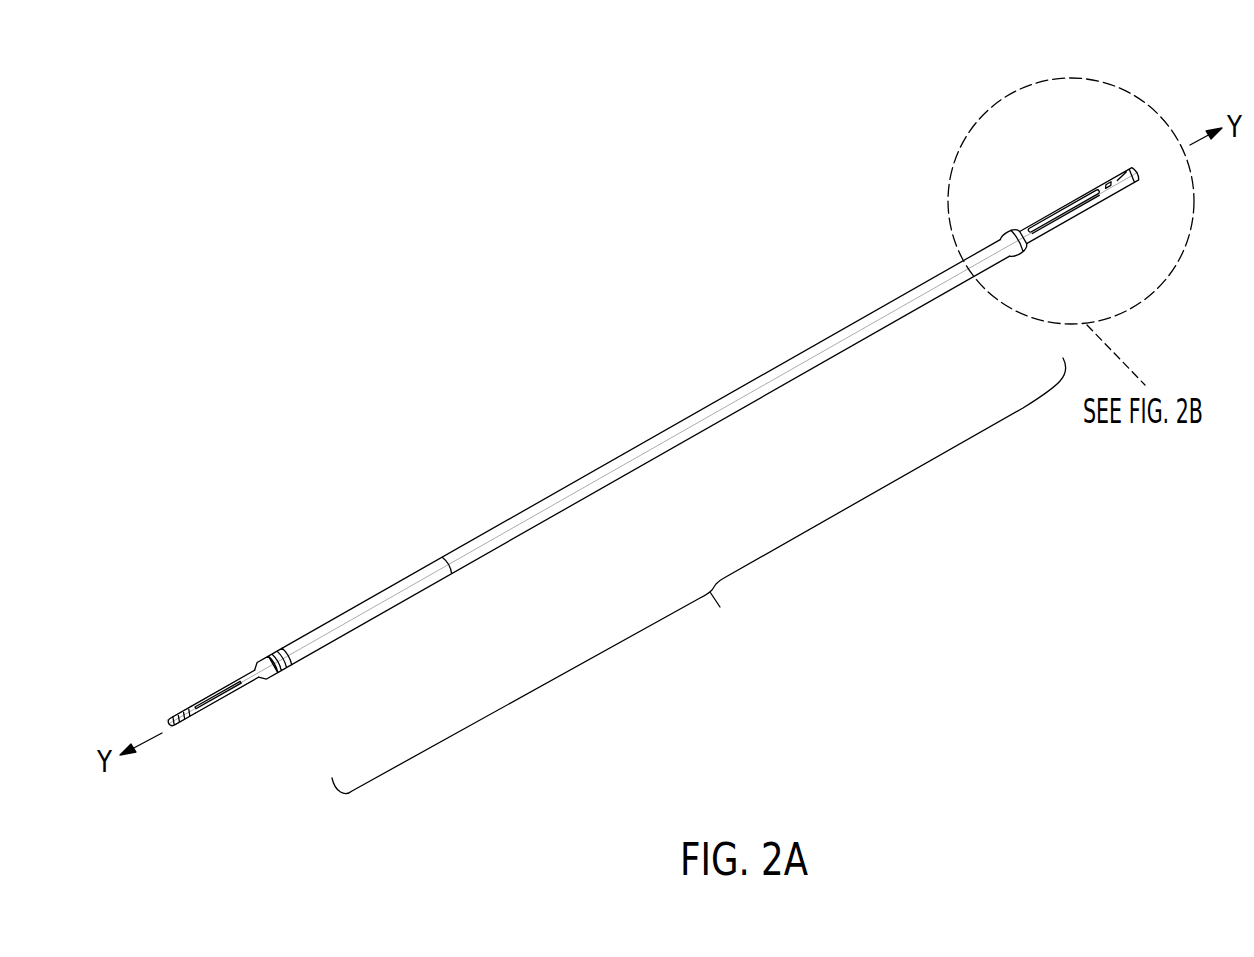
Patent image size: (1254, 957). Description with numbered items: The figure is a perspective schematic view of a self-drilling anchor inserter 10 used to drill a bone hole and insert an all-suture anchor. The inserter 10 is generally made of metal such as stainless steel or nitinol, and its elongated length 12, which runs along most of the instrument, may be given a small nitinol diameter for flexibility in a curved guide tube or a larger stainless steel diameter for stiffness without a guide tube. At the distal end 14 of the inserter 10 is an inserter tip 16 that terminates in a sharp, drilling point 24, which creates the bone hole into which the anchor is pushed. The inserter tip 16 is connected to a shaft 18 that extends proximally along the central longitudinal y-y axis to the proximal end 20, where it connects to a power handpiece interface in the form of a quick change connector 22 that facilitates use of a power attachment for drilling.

The self-drilling anchor inserter 10 is at (573, 312).
The length 12 is at (645, 452).
The distal end 14 is at (262, 710).
The inserter tip 16 is at (172, 690).
The shaft 18 is at (225, 685).
The proximal end 20 is at (1030, 128).
The quick change connector 22 is at (1130, 267).
The sharp, drilling point 24 is at (172, 729).